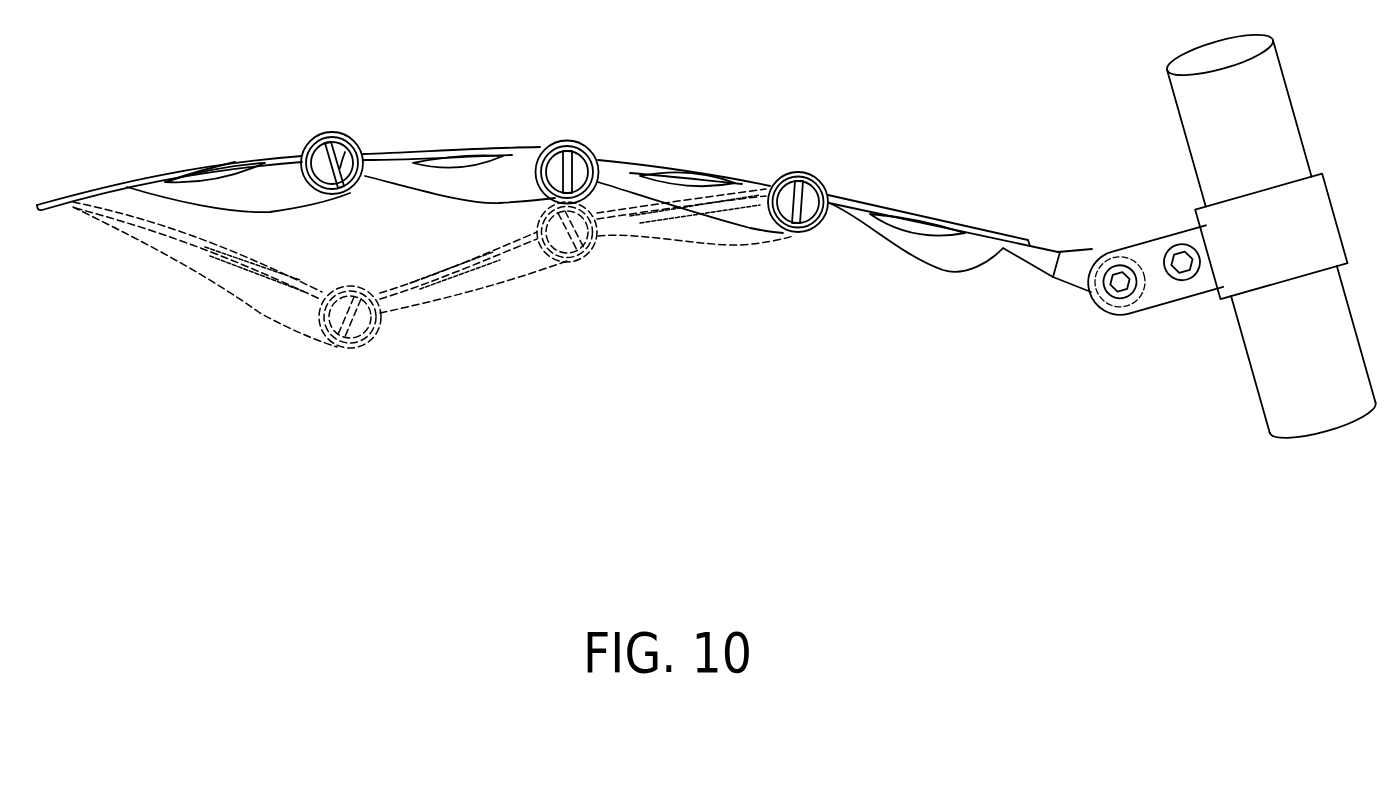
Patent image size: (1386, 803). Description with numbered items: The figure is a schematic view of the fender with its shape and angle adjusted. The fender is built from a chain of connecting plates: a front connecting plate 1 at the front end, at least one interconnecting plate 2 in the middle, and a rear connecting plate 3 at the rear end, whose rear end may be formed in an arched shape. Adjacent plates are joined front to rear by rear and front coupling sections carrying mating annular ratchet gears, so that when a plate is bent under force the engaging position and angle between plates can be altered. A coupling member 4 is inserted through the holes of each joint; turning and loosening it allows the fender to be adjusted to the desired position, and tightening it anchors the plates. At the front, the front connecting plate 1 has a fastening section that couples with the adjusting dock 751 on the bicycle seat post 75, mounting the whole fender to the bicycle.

The front connecting plate 1 is at (960, 217).
The interconnecting plate 2 is at (666, 163).
The rear connecting plate 3 is at (267, 148).
The coupling member 4 is at (354, 139).
The bicycle seat post 75 is at (1283, 144).
The adjusting dock 751 is at (1173, 289).